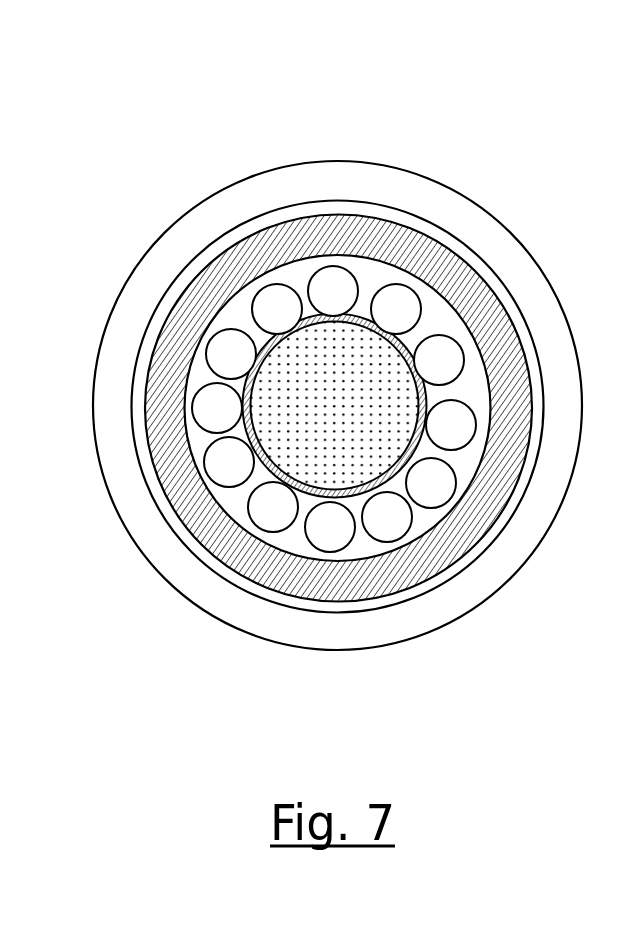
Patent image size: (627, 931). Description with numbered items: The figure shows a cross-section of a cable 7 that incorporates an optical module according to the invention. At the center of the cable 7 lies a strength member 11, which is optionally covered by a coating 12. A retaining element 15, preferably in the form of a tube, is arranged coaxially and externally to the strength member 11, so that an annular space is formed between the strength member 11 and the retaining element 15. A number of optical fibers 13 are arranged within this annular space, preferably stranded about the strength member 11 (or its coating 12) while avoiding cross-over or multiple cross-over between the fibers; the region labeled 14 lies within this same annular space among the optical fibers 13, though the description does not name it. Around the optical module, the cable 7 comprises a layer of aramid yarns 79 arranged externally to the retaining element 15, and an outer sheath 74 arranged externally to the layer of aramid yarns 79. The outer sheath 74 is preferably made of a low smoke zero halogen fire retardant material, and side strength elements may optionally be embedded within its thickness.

The cable 7 is at (192, 147).
The strength member 11 is at (362, 322).
The coating 12 is at (413, 348).
The optical fibers 13 is at (457, 340).
The rolling element ball 14 is at (362, 550).
The retaining element 15 is at (475, 545).
The outer sheath 74 is at (108, 493).
The layer of aramid yarns 79 is at (170, 282).